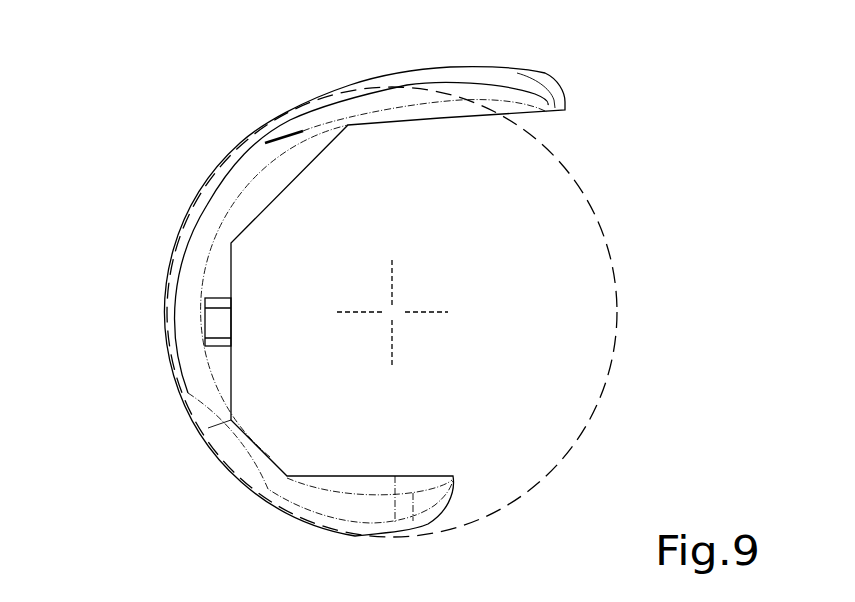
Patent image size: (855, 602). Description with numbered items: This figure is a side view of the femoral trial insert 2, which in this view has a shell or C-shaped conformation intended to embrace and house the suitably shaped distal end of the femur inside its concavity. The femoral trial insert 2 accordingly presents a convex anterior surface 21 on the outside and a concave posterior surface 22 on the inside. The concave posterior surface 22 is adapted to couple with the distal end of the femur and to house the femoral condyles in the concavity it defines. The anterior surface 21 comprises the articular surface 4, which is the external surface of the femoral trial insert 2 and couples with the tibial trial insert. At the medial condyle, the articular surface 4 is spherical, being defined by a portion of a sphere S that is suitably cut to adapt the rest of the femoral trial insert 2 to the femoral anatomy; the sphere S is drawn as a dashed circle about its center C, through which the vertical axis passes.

The femoral trial insert 2 is at (178, 111).
The articular surface 4 is at (182, 221).
The convex anterior surface 21 is at (180, 393).
The concave posterior surface 22 is at (407, 121).
The center of the sphere C is at (392, 310).
The sphere S is at (617, 337).